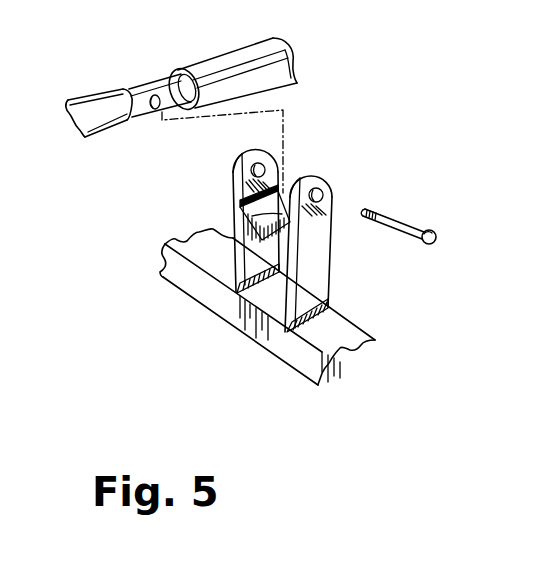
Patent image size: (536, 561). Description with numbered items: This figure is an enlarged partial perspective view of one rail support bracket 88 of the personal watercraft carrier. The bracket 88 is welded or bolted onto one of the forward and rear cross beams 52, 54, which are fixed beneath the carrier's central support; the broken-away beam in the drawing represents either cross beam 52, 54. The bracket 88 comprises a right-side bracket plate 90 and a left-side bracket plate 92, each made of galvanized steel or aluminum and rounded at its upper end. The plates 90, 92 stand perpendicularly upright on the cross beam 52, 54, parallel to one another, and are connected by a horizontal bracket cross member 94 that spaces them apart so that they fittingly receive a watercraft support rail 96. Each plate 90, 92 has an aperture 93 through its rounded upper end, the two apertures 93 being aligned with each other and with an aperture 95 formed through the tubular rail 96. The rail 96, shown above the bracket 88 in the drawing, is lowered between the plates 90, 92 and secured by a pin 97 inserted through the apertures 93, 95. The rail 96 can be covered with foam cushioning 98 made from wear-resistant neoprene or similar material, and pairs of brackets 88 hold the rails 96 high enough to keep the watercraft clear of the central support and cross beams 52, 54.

The forward crossbeam 52 is at (267, 312).
The rear cross beam 54 is at (323, 338).
The rail support bracket 88 is at (304, 156).
The right-side bracket plate 90 is at (232, 172).
The left-side bracket plate 92 is at (330, 279).
The aperture 93 is at (320, 193).
The horizontal bracket cross member 94 is at (240, 203).
The aperture 95 is at (147, 92).
The watercraft support rail 96 is at (152, 93).
The pin 97 is at (434, 245).
The foam cushioning 98 is at (92, 92).